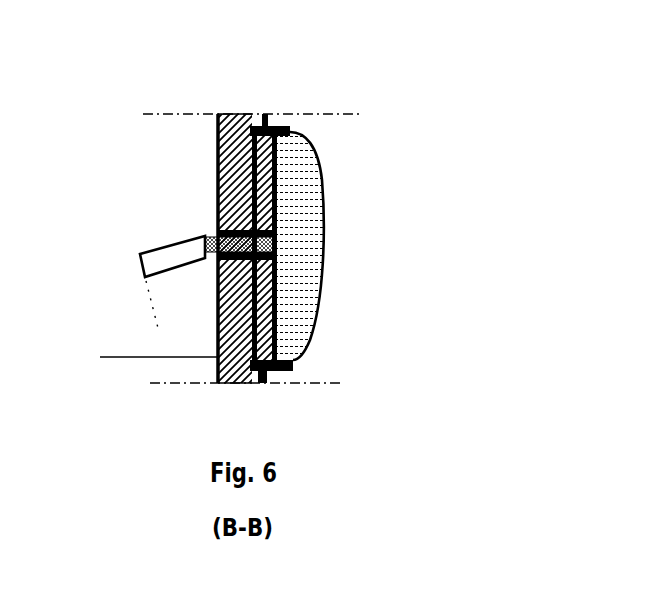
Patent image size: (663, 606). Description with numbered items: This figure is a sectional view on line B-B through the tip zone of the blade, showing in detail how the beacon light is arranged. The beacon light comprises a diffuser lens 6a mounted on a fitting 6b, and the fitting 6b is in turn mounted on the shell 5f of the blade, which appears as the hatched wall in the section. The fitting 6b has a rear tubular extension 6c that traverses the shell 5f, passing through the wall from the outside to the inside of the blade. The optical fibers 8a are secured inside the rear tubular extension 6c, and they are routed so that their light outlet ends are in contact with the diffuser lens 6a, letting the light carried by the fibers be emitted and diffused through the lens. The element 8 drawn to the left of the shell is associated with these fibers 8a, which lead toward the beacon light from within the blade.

The shell 5f is at (218, 150).
The diffuser lens 6a is at (322, 182).
The fitting 6b is at (283, 120).
The rear tubular extension 6c is at (218, 223).
The lever 8 is at (157, 247).
The optical fibers 8a is at (277, 244).